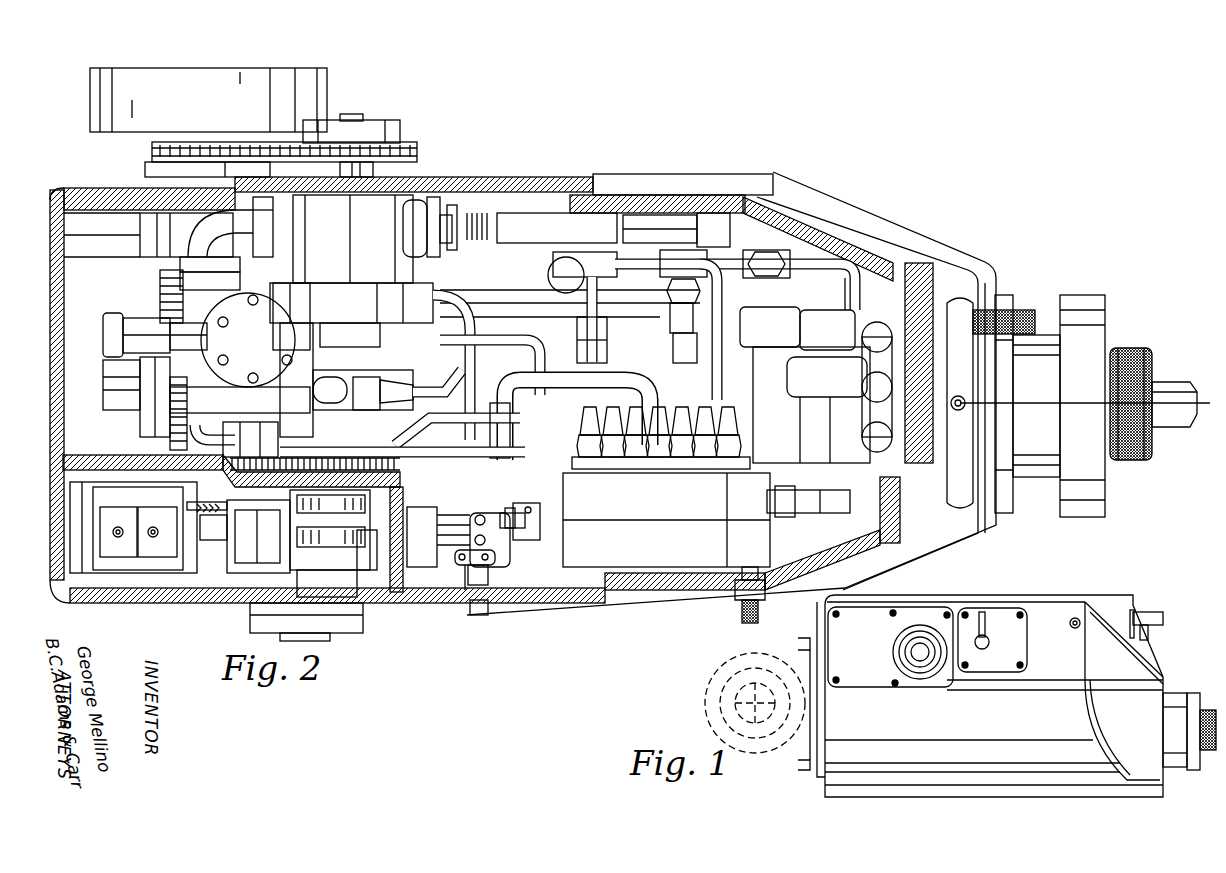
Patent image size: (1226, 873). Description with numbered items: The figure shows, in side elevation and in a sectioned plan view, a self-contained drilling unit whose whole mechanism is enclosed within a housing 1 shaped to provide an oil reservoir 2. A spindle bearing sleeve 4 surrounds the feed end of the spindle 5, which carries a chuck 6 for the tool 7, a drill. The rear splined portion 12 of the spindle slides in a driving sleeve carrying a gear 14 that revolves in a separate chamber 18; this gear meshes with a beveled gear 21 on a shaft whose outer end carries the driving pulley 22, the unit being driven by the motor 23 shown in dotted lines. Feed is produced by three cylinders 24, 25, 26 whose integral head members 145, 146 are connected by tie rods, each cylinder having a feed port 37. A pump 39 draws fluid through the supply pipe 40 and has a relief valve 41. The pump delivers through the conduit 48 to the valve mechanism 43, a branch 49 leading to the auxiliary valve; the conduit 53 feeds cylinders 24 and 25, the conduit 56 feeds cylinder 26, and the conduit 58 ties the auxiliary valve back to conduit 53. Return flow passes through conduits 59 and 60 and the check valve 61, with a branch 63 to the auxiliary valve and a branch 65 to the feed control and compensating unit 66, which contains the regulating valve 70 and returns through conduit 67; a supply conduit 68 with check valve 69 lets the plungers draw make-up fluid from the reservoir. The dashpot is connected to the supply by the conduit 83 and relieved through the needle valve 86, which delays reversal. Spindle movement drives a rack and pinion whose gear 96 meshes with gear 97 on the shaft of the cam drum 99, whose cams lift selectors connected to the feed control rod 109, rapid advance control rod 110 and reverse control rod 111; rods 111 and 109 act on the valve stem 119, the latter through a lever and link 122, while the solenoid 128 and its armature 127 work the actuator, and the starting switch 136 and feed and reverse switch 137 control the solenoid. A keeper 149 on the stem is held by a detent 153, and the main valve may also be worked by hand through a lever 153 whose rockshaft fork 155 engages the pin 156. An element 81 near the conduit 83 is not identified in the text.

In FIG. 2, the housing 1 is at (452, 178).
In FIG. 1, the housing 1 is at (1043, 603).
In FIG. 2, the reservoir 2 is at (865, 262).
In FIG. 1, the reservoir 2 is at (1090, 622).
In FIG. 2, the spindle bearing sleeve 4 is at (1040, 340).
In FIG. 1, the spindle bearing sleeve 4 is at (1175, 710).
In FIG. 2, the spindle 5 is at (130, 415).
In FIG. 2, the chuck 6 is at (1132, 348).
In FIG. 1, the chuck 6 is at (1208, 710).
In FIG. 2, the tool 7 is at (1172, 384).
In FIG. 2, the splined portion 12 is at (105, 372).
In FIG. 2, the gear 14 is at (160, 298).
In FIG. 2, the chamber 18 is at (118, 222).
In FIG. 2, the beveled gear 21 is at (240, 262).
In FIG. 2, the driving pulley 22 is at (322, 97).
In FIG. 1, the motor 23 is at (765, 745).
In FIG. 2, the cylinder 24 is at (488, 365).
In FIG. 2, the cylinder 25 is at (445, 452).
In FIG. 2, the cylinder 26 is at (387, 338).
In FIG. 2, the feed port 37 is at (310, 403).
In FIG. 2, the pump 39 is at (440, 243).
In FIG. 2, the supply pipe 40 is at (482, 250).
In FIG. 2, the relief valve 41 is at (120, 328).
In FIG. 2, the valve mechanism 43 is at (665, 548).
In FIG. 2, the conduit 48 is at (628, 362).
In FIG. 2, the branch 49 is at (500, 462).
In FIG. 2, the conduit 53 is at (455, 305).
In FIG. 2, the conduit 56 is at (452, 385).
In FIG. 2, the conduit 58 is at (670, 375).
In FIG. 2, the conduit 59 is at (600, 290).
In FIG. 2, the conduit 60 is at (727, 378).
In FIG. 2, the check valve 61 is at (667, 315).
In FIG. 2, the branch 63 is at (730, 444).
In FIG. 2, the branch 65 is at (770, 327).
In FIG. 2, the feed control and compensating unit 66 is at (820, 315).
In FIG. 2, the return conduit 67 is at (857, 292).
In FIG. 2, the supply conduit 68 is at (820, 262).
In FIG. 2, the check valve 69 is at (766, 253).
In FIG. 2, the regulating valve 70 is at (890, 445).
In FIG. 1, the regulating valve 70 is at (1146, 633).
In FIG. 2, the plate 81 is at (578, 473).
In FIG. 2, the conduit 83 is at (830, 492).
In FIG. 2, the needle valve 86 is at (750, 565).
In FIG. 1, the needle valve 86 is at (1073, 628).
In FIG. 2, the gear 96 is at (422, 537).
In FIG. 2, the gear 97 is at (270, 445).
In FIG. 2, the cam drum 99 is at (310, 572).
In FIG. 2, the feed control rod 109 is at (375, 560).
In FIG. 2, the rapid advance control rod 110 is at (438, 534).
In FIG. 2, the reverse control rod 111 is at (472, 514).
In FIG. 2, the valve stem 119 is at (528, 508).
In FIG. 2, the link 122 is at (462, 570).
In FIG. 2, the armature 127 is at (210, 540).
In FIG. 2, the solenoid 128 is at (133, 527).
In FIG. 2, the starting switch 136 is at (258, 540).
In FIG. 2, the feed and reverse switch 137 is at (270, 606).
In FIG. 2, the head member 145 is at (296, 378).
In FIG. 2, the head member 146 is at (657, 215).
In FIG. 2, the keeper 149 is at (525, 525).
In FIG. 2, the lever 153 is at (518, 516).
In FIG. 1, the lever 153 is at (1000, 636).
In FIG. 2, the fork 155 is at (490, 578).
In FIG. 2, the pin 156 is at (496, 556).